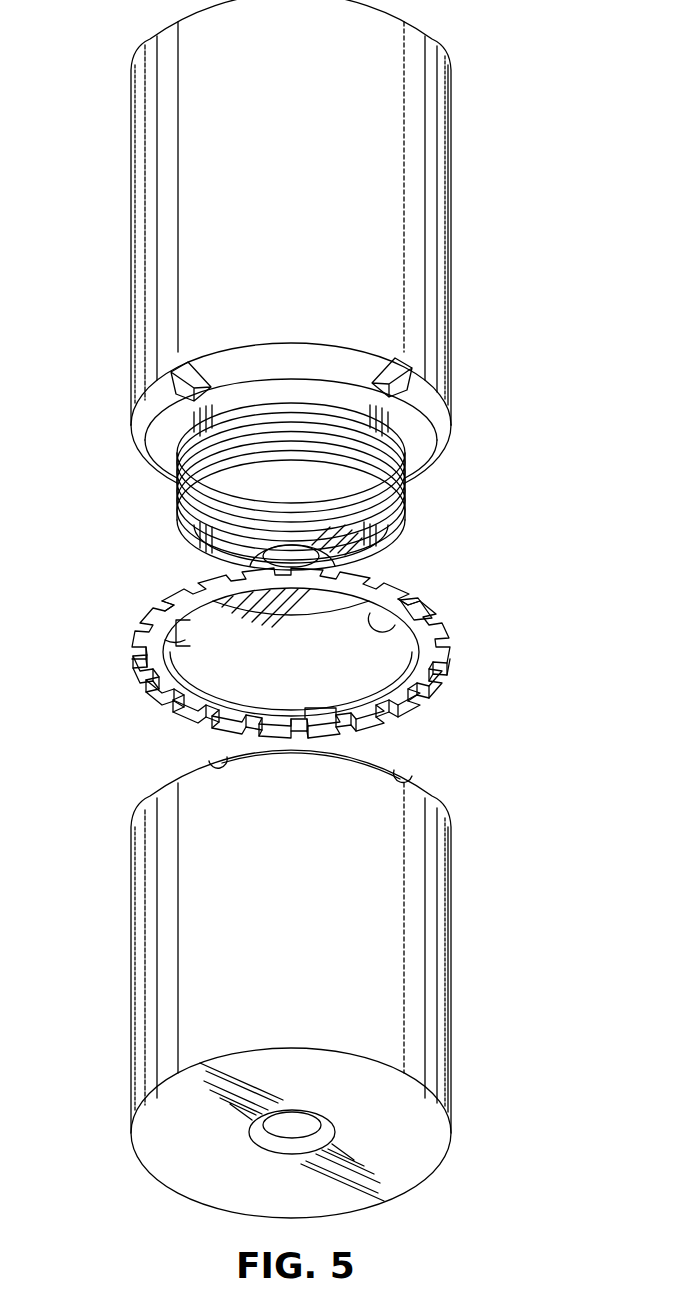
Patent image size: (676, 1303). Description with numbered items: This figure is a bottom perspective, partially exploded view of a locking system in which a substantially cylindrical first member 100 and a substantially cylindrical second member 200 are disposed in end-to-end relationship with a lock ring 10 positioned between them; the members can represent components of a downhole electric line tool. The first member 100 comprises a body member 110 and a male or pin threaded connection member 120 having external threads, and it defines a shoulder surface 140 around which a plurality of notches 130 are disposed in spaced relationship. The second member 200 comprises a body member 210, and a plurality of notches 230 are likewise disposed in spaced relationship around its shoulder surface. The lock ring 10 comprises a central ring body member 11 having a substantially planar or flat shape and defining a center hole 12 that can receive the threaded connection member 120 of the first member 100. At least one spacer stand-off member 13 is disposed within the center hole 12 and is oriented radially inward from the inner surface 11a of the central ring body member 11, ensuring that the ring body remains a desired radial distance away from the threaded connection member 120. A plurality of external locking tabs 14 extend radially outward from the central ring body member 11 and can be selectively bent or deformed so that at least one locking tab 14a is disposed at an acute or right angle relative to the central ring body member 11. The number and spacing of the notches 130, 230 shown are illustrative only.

The lock ring 10 is at (460, 653).
The central ring body member 11 is at (258, 718).
The inner surface 11a is at (193, 608).
The center hole 12 is at (393, 638).
The spacer stand-off member 13 is at (188, 637).
The external locking tabs 14 is at (137, 654).
The locking tab 14a is at (177, 590).
The first member 100 is at (458, 247).
The body member 110 is at (172, 221).
The threaded connection member 120 is at (383, 491).
The notches 130 is at (189, 369).
The shoulder surface 140 is at (302, 375).
The second member 200 is at (458, 998).
The body member 210 is at (183, 900).
The notches 230 is at (217, 763).